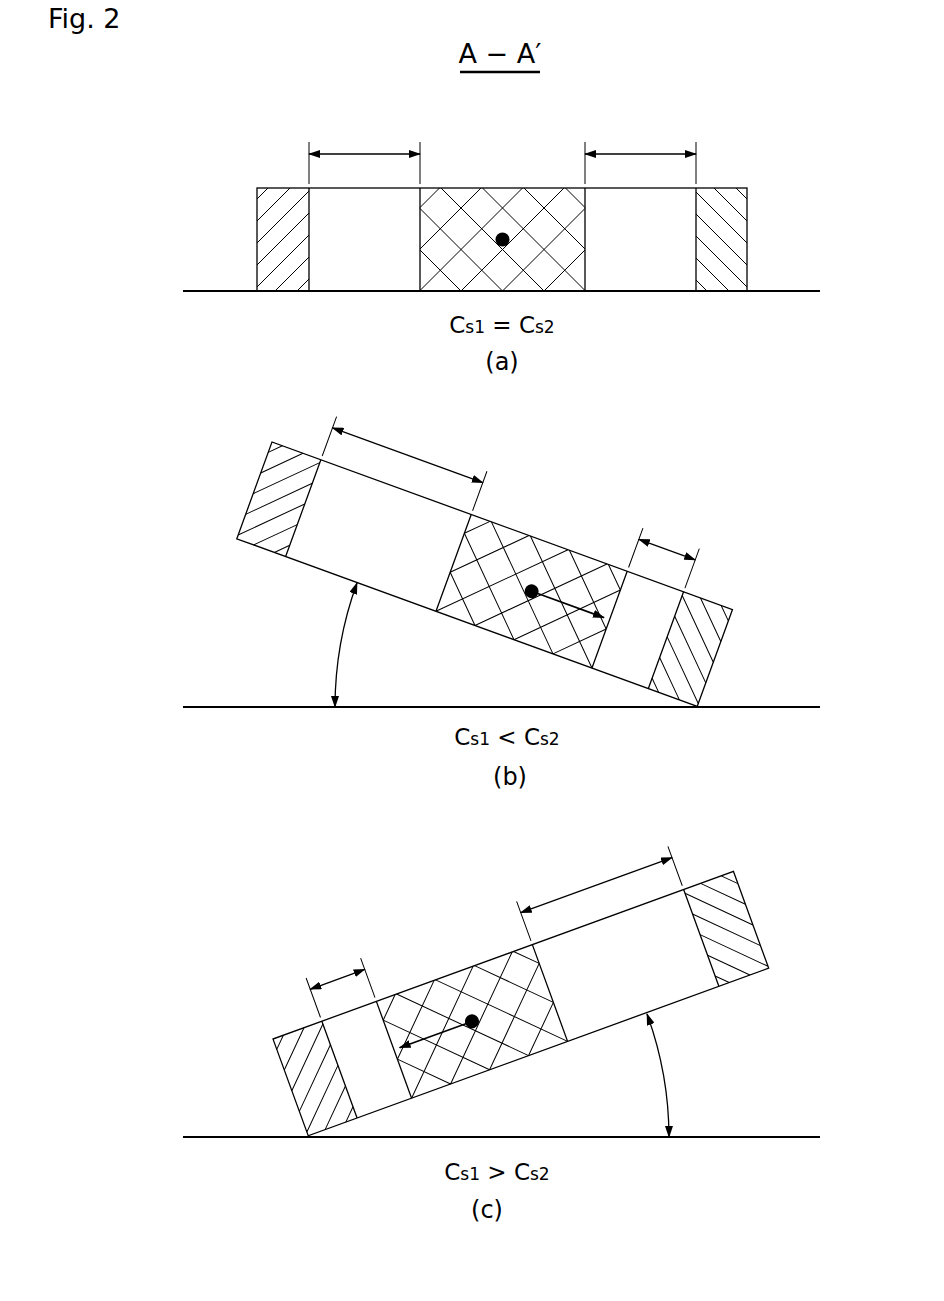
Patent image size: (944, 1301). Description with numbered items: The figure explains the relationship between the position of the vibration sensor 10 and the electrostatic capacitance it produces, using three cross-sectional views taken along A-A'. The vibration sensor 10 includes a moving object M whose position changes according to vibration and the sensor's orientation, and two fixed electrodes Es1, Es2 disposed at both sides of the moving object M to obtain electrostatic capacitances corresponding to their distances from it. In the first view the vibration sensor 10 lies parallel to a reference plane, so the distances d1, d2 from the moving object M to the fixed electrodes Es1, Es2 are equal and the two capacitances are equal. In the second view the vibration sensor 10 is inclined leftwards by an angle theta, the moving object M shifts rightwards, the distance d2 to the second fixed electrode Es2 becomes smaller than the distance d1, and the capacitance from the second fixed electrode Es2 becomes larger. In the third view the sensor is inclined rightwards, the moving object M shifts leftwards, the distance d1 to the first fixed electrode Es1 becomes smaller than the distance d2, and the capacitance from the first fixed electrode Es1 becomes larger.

The vibration sensor 10 is at (784, 178).
The first fixed electrode Es1 is at (297, 662).
The second fixed electrode Es2 is at (708, 587).
The moving object M is at (501, 643).
The distance between the moving object and the first fixed electrode d1 is at (396, 569).
The distance between the moving object and the second fixed electrode d2 is at (608, 531).